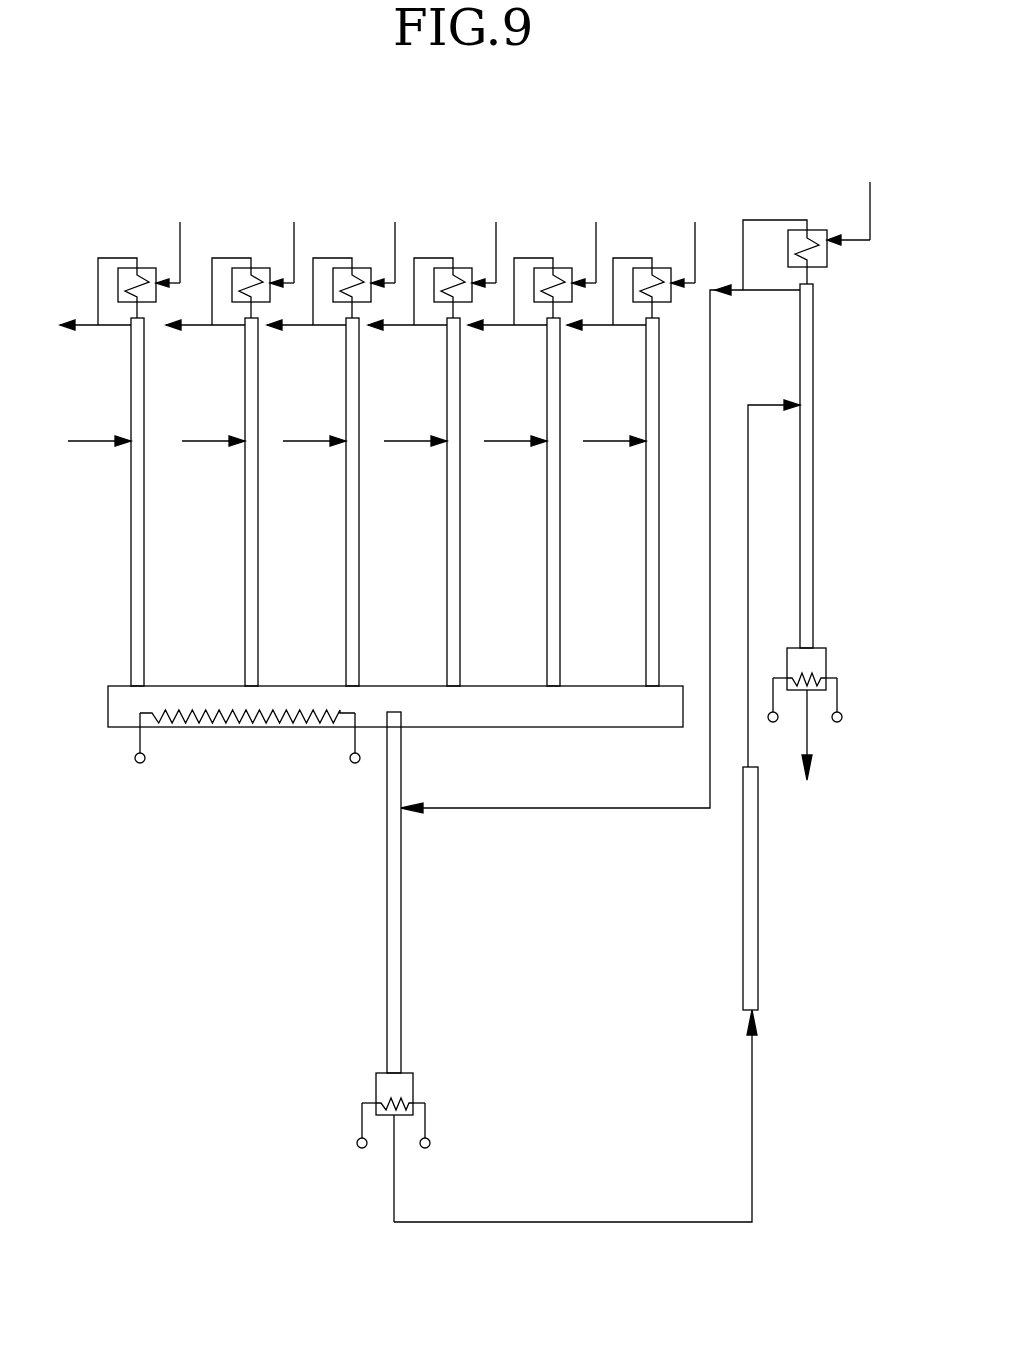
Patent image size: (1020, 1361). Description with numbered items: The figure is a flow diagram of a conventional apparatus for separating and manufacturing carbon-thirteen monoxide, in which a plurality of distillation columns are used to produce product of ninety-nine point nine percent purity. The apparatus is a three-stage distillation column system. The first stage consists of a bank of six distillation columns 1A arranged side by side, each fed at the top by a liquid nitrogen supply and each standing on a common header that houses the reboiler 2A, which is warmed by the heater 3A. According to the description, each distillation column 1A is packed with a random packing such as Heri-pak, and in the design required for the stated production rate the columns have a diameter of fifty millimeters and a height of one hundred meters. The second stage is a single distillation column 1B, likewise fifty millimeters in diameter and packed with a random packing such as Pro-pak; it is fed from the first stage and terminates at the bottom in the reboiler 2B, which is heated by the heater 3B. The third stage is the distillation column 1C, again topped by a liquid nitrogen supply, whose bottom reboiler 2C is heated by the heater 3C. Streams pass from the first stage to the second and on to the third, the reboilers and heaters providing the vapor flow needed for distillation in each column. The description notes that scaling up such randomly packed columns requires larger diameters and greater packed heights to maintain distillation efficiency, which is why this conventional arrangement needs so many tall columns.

The distillation column 1A is at (132, 590).
The reboiler 2A is at (108, 697).
The heater 3A is at (193, 717).
The distillation column 1B is at (401, 890).
The reboiler 2B is at (413, 1088).
The heater 3B is at (387, 1097).
The distillation column 1C is at (813, 465).
The reboiler 2C is at (827, 683).
The heater 3C is at (810, 675).